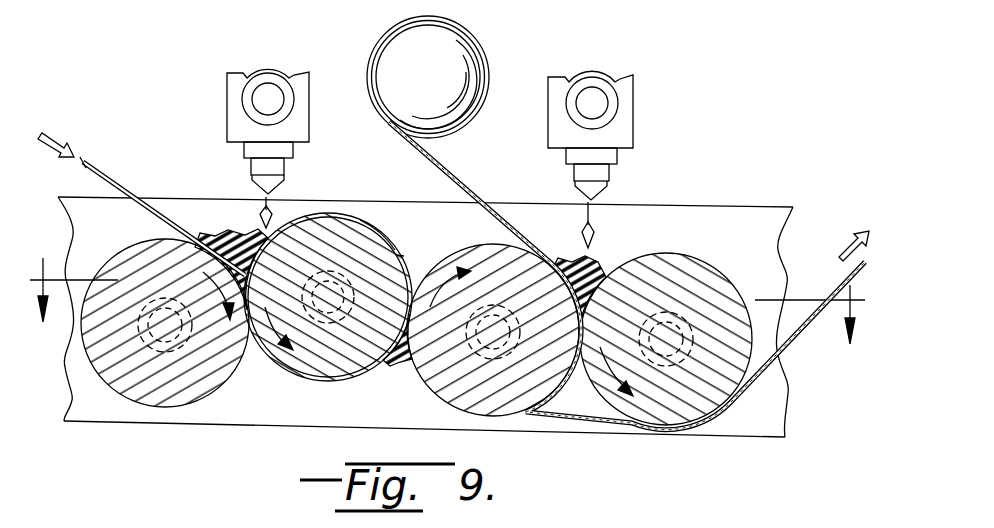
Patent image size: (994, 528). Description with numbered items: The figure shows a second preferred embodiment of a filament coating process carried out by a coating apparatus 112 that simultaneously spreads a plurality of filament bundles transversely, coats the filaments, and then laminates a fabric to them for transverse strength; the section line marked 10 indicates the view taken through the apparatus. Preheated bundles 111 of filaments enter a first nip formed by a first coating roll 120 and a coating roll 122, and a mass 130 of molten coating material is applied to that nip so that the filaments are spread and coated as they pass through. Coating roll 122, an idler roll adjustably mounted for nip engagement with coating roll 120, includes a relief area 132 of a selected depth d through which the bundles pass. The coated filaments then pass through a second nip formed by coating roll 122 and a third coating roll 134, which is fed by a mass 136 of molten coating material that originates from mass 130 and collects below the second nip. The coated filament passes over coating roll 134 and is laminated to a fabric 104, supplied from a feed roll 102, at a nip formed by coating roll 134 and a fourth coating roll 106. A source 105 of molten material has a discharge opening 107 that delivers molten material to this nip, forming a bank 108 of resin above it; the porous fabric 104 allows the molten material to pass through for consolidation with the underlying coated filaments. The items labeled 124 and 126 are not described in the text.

The feed roll 102 is at (470, 42).
The fabric 104 is at (440, 166).
The source of molten material 105 is at (640, 92).
The fourth coating roll 106 is at (702, 246).
The discharge opening 107 is at (594, 200).
The bank of resin 108 is at (604, 258).
The bundles of filaments 111 is at (118, 176).
The coating apparatus 112 is at (195, 70).
The first coating roll 120 is at (141, 402).
The coating roll 122 is at (300, 380).
The first adhesive applicator 124 is at (312, 93).
The adhesive discharge of first applicator 126 is at (270, 197).
The mass of molten coating material 130 is at (218, 232).
The relief area 132 is at (378, 224).
The third coating roll 134 is at (530, 412).
The mass of molten coating material 136 is at (393, 365).
The section line 10- 10 is at (445, 319).
The depth d is at (380, 268).